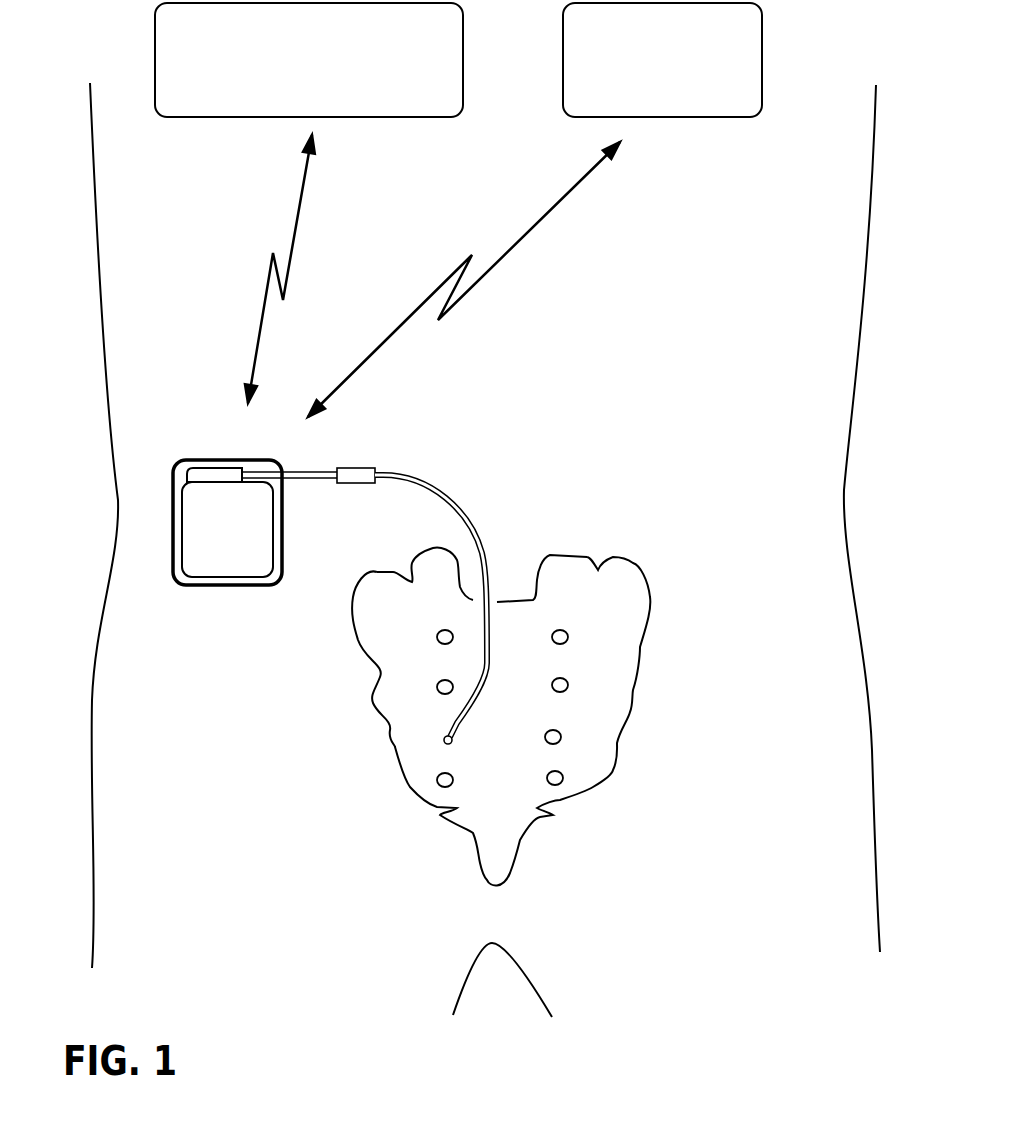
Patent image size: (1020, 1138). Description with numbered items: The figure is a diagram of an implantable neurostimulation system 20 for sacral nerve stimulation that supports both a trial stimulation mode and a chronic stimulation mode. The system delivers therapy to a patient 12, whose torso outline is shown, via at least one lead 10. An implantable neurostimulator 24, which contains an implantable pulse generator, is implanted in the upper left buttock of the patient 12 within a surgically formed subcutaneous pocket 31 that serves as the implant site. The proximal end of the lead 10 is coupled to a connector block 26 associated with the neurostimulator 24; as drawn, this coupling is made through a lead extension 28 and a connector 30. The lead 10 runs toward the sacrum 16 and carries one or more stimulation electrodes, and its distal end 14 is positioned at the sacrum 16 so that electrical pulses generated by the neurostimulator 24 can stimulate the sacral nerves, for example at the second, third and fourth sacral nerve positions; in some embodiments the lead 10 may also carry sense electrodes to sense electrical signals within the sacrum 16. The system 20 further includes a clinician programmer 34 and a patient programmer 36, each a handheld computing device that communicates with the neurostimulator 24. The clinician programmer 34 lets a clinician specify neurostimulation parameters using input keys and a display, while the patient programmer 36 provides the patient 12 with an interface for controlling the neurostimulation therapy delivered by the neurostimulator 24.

The lead 10 is at (455, 500).
The patient 12 is at (847, 540).
The electrodes at distal end of lead 14 is at (446, 741).
The sacrum 16 is at (632, 708).
The implantable neurostimulation system 20 is at (107, 585).
The implantable neurostimulator 24 is at (210, 512).
The connector block 26 is at (222, 472).
The lead extension 28 is at (305, 480).
The connector 30 is at (356, 469).
The subcutaneous pocket 31 is at (164, 449).
The clinician programmer 34 is at (155, 60).
The patient programmer 36 is at (563, 60).